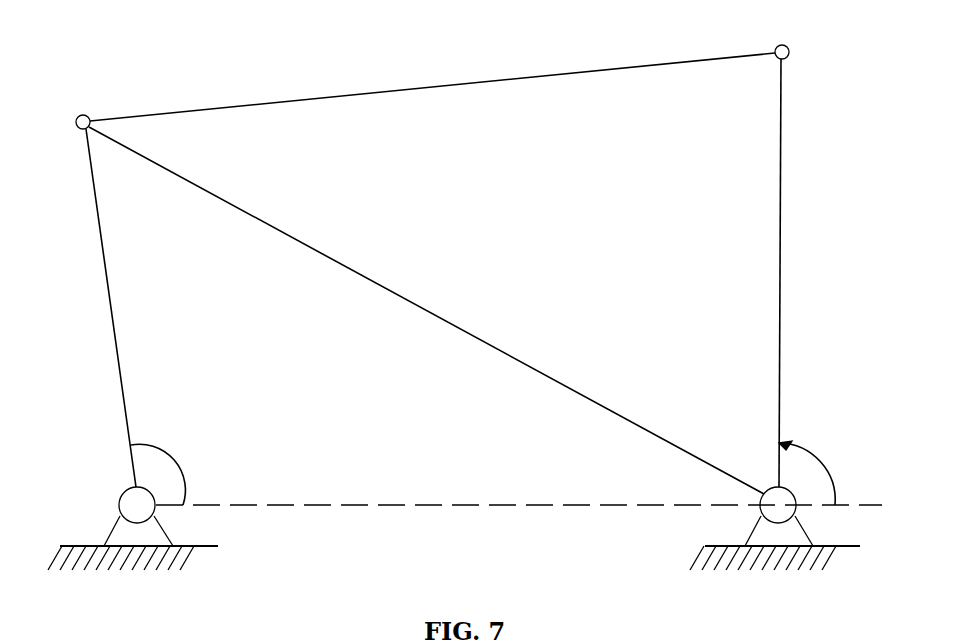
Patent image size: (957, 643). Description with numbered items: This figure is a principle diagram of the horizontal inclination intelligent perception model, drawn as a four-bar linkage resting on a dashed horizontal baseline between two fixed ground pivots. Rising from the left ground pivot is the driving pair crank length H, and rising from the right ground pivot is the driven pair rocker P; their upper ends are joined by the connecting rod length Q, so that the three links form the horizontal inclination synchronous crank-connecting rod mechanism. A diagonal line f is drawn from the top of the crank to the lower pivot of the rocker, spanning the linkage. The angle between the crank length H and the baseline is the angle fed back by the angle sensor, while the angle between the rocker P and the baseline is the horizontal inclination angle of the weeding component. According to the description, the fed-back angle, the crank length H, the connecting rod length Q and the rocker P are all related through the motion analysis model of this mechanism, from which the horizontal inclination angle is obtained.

The driving pair crank length H is at (100, 308).
The driven pair rocker P is at (809, 273).
The connecting rod length Q is at (432, 69).
The diagonal f is at (426, 310).